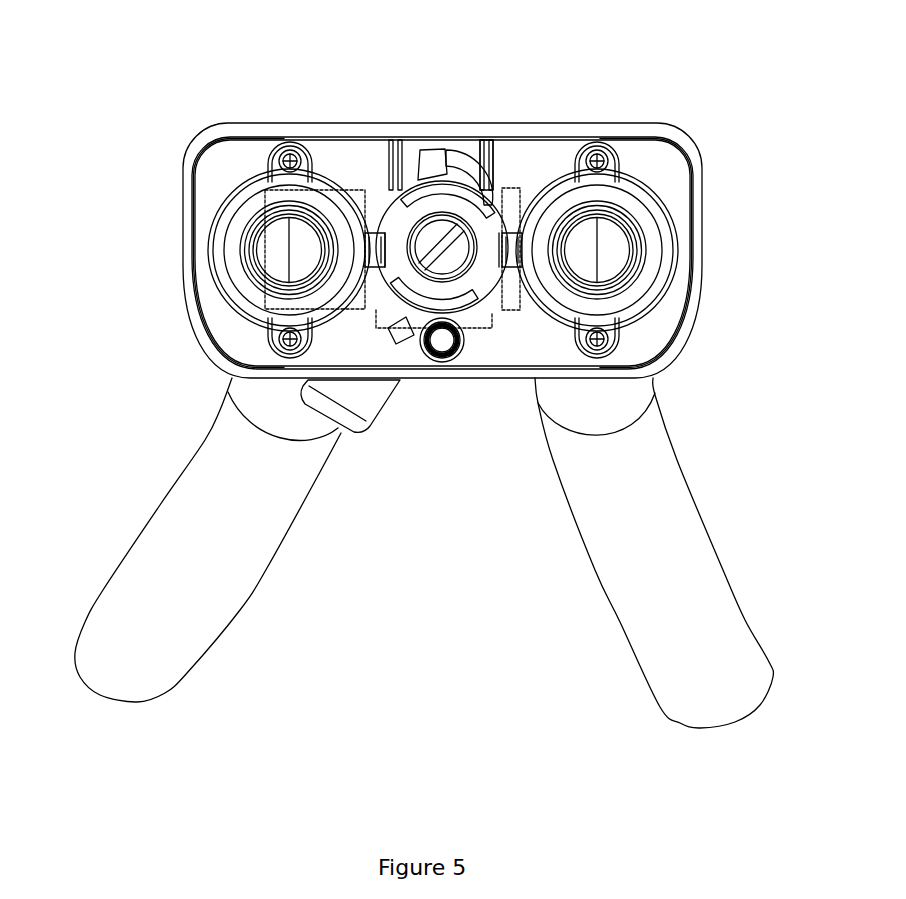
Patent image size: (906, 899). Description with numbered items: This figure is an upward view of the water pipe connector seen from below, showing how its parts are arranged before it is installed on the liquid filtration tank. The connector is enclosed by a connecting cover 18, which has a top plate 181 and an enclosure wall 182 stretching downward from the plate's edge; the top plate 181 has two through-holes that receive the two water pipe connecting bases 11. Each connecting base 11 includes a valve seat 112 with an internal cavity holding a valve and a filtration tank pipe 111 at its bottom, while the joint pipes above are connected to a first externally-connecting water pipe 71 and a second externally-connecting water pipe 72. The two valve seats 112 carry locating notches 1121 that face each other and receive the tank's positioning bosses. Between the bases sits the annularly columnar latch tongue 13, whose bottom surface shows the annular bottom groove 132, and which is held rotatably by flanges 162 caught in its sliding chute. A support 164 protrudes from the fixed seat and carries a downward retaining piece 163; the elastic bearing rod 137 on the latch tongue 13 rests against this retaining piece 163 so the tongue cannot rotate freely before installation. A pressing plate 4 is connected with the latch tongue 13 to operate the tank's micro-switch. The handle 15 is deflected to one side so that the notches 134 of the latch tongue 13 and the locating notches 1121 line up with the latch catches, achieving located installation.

The pressing plate 4 is at (226, 403).
The water pipe connecting base 11 is at (442, 250).
The filtration tank pipe 111 is at (233, 240).
The valve seat 112 is at (362, 202).
The locating notch 1121 is at (372, 247).
The latch tongue 13 is at (395, 219).
The annular bottom groove 132 is at (408, 324).
The notch 134 is at (265, 309).
The elastic bearing rod 137 is at (472, 160).
The handle 15 is at (352, 402).
The flange 162 is at (452, 305).
The retaining piece 163 is at (440, 157).
The support 164 is at (428, 165).
The connecting cover 18 is at (442, 253).
The top plate 181 is at (660, 165).
The enclosure wall 182 is at (192, 284).
The first externally-connecting water pipe 71 is at (148, 617).
The second externally-connecting water pipe 72 is at (700, 663).